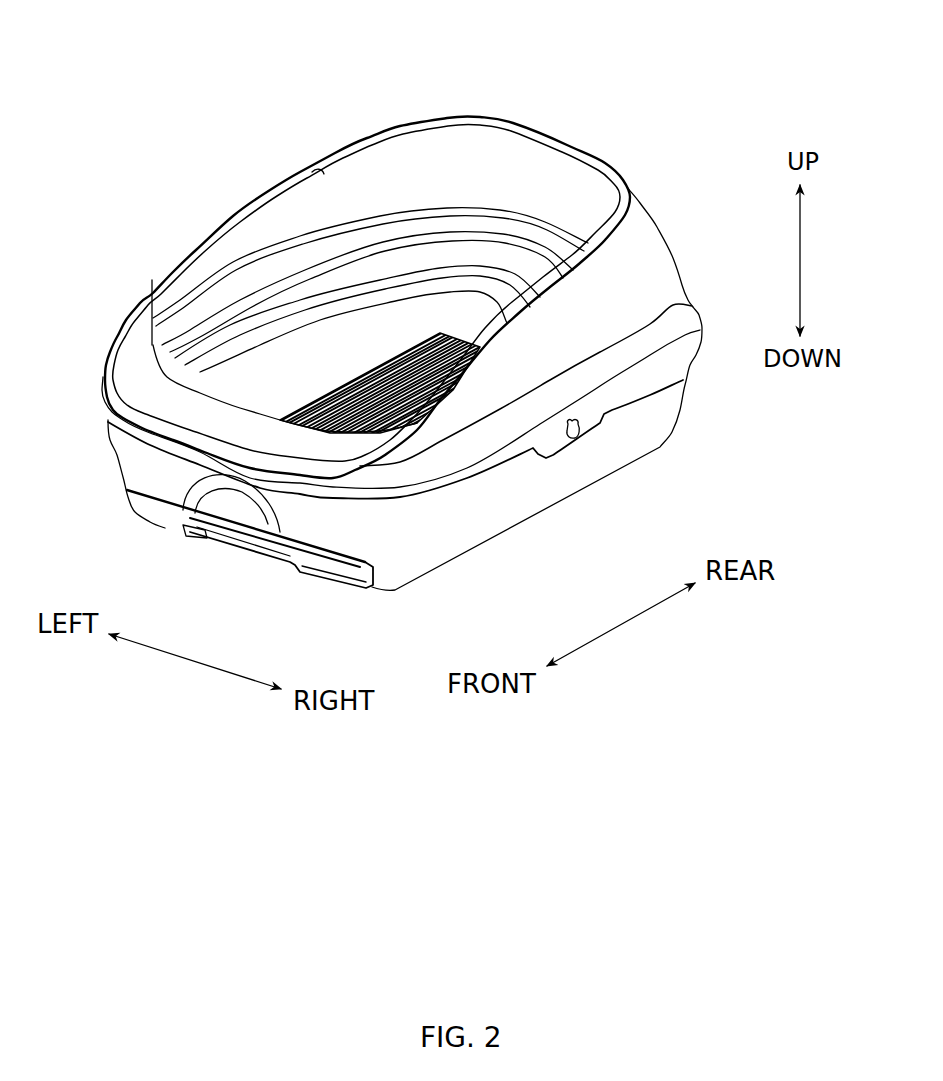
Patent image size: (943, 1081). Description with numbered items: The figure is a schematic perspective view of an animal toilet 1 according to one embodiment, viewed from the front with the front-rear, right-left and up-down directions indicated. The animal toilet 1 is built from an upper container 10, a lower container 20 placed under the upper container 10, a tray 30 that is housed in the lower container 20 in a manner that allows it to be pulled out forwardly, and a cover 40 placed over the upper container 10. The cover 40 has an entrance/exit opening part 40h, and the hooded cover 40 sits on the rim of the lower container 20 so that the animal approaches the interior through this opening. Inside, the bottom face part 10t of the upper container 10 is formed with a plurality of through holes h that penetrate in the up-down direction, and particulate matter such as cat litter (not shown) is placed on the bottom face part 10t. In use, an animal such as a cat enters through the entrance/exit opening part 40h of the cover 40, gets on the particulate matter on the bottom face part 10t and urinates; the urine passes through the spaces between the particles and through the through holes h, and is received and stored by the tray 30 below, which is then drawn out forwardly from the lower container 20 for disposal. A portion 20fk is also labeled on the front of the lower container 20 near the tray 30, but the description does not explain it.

The animal toilet 1 is at (565, 102).
The upper container 10 is at (254, 254).
The bottom face part 10t is at (293, 391).
The through holes h is at (352, 371).
The lower container 20 is at (555, 492).
The finger hook portion 20fk is at (211, 496).
The tray 30 is at (315, 570).
The cover 40 is at (376, 121).
The entrance/exit opening part 40h is at (318, 176).